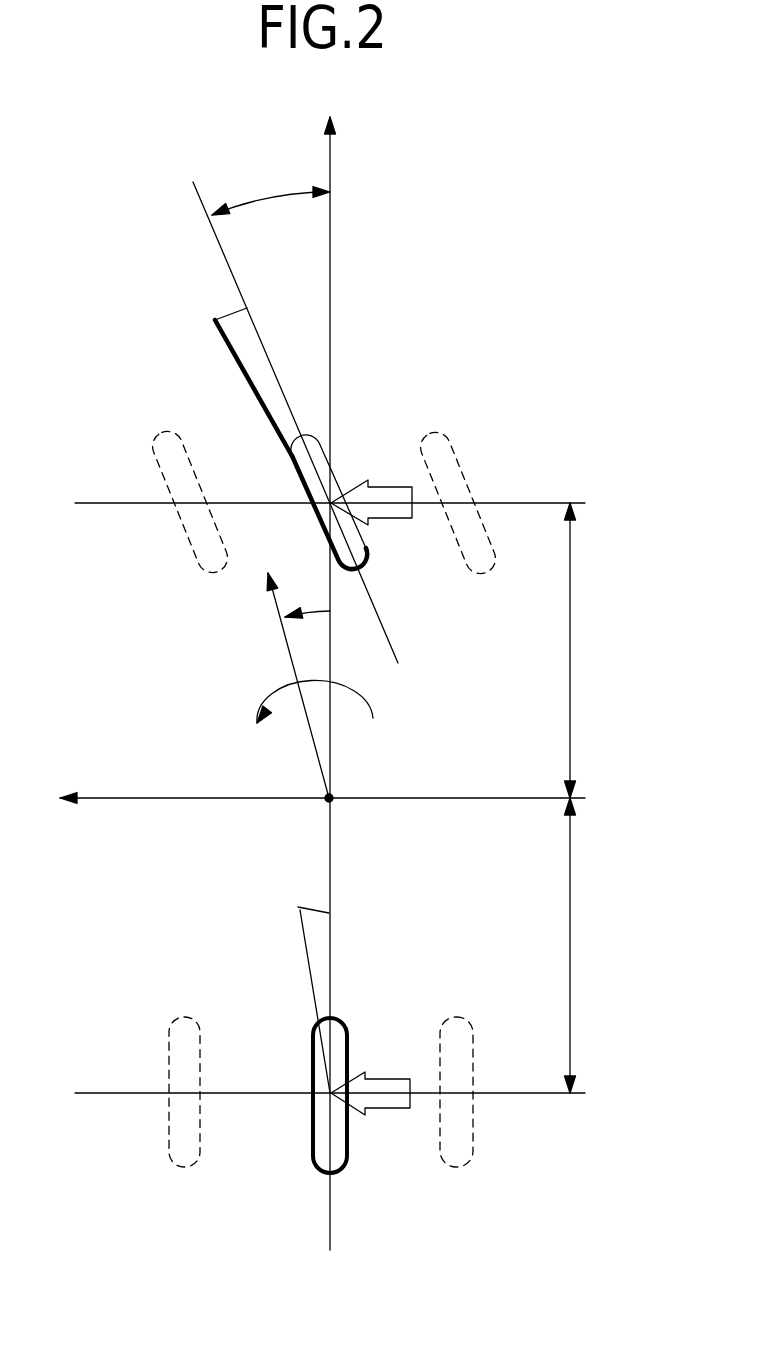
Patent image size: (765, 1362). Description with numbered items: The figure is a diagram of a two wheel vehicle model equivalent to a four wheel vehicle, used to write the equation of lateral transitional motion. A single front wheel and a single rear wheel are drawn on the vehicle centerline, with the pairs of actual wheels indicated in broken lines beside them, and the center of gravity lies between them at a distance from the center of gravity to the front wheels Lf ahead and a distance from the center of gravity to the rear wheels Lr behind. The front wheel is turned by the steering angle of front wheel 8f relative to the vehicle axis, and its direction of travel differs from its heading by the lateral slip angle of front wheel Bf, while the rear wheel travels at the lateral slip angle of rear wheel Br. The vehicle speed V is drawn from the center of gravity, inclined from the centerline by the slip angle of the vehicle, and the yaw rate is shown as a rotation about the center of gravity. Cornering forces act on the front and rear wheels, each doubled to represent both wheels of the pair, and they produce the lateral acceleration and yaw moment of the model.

The steering angle of front wheel 8f is at (271, 188).
The lateral slip angle of front wheel Bf is at (232, 313).
The vehicle speed V is at (290, 668).
The distance from the center of gravity to the front wheels Lf is at (585, 650).
The distance from the center of gravity to the rear wheels Lr is at (586, 945).
The lateral slip angle of rear wheel Br is at (310, 912).